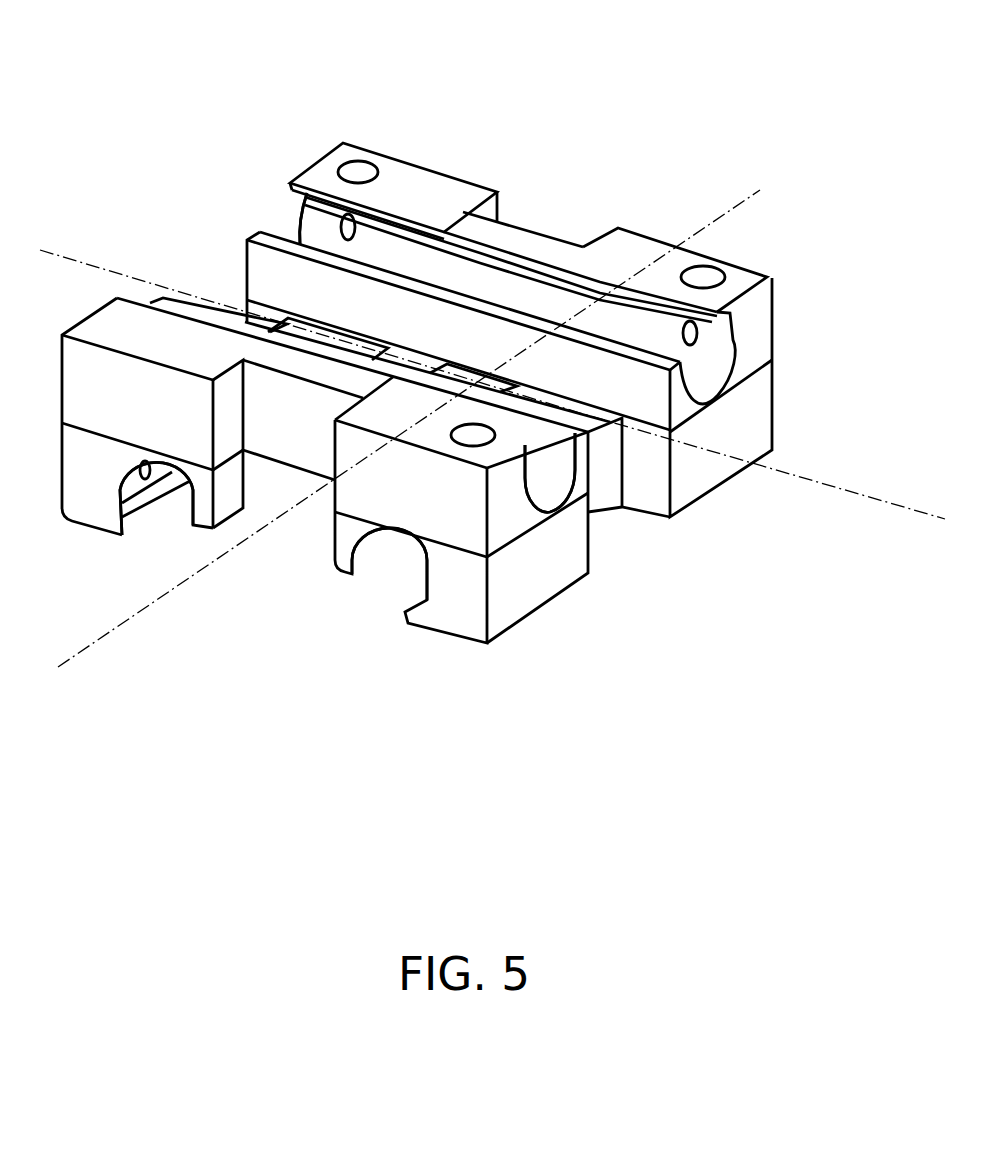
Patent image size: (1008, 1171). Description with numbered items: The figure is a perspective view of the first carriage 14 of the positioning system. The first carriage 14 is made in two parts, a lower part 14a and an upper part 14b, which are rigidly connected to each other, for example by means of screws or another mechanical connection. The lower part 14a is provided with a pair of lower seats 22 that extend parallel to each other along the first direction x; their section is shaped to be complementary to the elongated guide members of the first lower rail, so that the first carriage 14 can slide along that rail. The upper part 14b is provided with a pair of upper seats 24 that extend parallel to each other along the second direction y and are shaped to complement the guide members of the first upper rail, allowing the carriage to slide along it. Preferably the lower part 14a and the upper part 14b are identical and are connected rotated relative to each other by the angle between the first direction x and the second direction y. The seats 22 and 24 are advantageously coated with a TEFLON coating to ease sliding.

The first carriage 14 is at (175, 233).
The lower part 14a is at (513, 597).
The upper part 14b is at (752, 325).
The lower seats 22 is at (155, 512).
The upper seats 24 is at (300, 215).
The first direction x is at (105, 640).
The second direction y is at (793, 483).